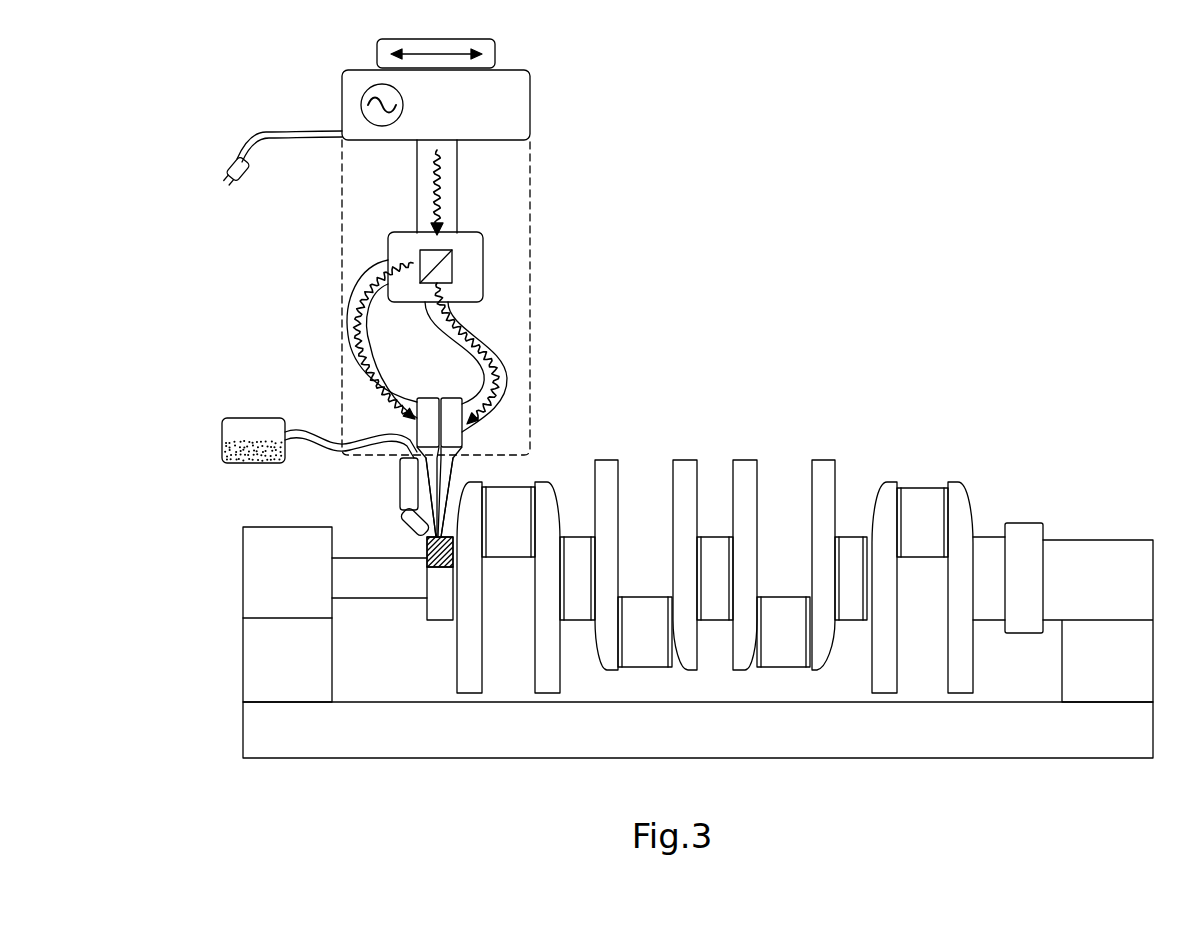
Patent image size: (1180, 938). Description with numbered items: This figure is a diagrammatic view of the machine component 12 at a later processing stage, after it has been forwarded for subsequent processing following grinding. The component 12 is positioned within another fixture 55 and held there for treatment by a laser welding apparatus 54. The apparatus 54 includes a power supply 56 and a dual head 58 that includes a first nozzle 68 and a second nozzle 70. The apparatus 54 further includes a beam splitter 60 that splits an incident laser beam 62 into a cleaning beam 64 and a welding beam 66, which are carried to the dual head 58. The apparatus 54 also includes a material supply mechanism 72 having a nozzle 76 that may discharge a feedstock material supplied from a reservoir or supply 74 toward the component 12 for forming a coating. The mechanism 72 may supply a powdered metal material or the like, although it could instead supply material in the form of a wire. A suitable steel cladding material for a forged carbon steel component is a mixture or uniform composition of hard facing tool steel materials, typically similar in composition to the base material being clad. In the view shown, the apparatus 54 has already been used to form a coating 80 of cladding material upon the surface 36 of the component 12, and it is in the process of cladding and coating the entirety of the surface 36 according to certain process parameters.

The machine component 12 is at (820, 460).
The surface 36 is at (437, 620).
The laser welding apparatus 54 is at (208, 379).
The fixture 55 is at (243, 645).
The power supply 56 is at (530, 106).
The dual head 58 is at (530, 336).
The beam splitter 60 is at (395, 233).
The incident laser beam 62 is at (457, 199).
The cleaning beam 64 is at (463, 336).
The welding beam 66 is at (349, 339).
The first nozzle 68 is at (462, 443).
The second nozzle 70 is at (422, 398).
The material supply mechanism 72 is at (363, 487).
The reservoir or supply 74 is at (222, 441).
The nozzle 76 is at (406, 514).
The coating 80 is at (437, 567).